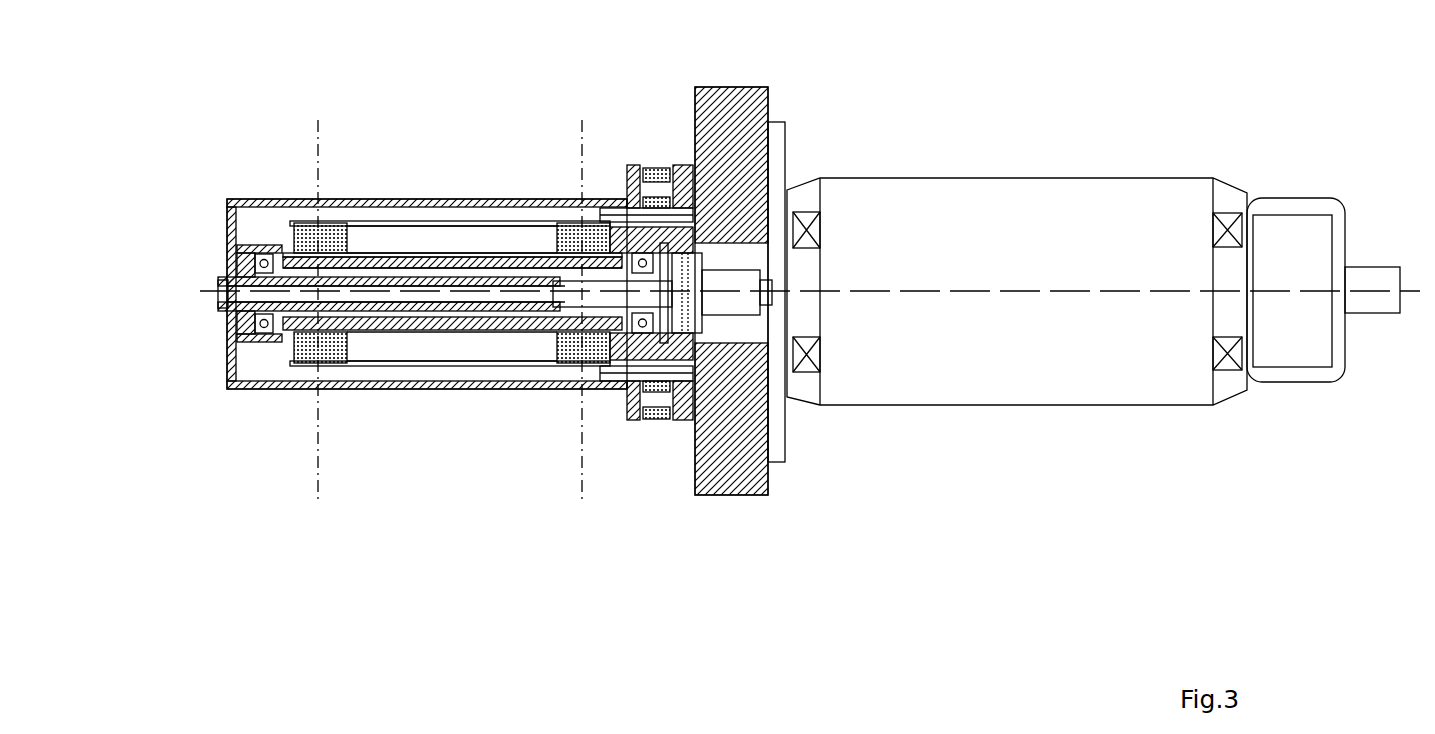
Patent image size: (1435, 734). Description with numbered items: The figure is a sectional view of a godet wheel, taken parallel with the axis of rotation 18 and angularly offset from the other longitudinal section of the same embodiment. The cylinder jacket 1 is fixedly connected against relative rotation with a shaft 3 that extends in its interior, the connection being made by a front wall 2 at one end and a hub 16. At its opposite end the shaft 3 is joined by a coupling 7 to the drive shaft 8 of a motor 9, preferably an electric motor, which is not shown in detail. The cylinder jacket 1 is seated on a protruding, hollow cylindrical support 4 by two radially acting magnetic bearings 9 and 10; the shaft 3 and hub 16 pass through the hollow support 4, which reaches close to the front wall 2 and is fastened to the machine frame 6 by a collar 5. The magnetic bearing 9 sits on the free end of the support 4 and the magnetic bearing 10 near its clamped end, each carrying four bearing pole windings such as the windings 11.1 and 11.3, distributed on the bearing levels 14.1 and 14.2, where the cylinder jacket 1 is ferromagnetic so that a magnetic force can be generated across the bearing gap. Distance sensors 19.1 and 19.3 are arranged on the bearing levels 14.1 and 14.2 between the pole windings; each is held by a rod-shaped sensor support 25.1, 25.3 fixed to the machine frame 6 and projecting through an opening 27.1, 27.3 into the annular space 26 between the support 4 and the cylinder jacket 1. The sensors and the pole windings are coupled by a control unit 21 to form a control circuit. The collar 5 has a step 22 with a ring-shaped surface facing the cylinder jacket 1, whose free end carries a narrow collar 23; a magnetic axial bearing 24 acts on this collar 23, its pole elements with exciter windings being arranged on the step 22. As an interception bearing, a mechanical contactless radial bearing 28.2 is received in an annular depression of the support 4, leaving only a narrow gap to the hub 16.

The cylinder jacket 1 is at (253, 200).
The front wall 2 is at (235, 240).
The shaft 3 is at (640, 185).
The support 4 is at (350, 215).
The collar 5 is at (672, 185).
The machine frame 6 is at (712, 120).
The coupling 7 is at (735, 170).
The drive shaft 8 is at (775, 195).
The magnetic bearing 9 is at (804, 276).
The magnetic bearing 10 is at (530, 348).
The bearing pole winding 11.1 is at (300, 222).
The bearing pole winding 11.3 is at (280, 388).
The bearing level 14.1 is at (350, 505).
The bearing level 14.2 is at (584, 505).
The hub 16 is at (450, 262).
The axis of rotation 18 is at (1045, 360).
The sensor 19.1 is at (340, 235).
The sensor 19.3 is at (303, 388).
The control unit 21 is at (1298, 330).
The step 22 is at (690, 420).
The collar 23 is at (635, 420).
The magnetic axial bearing 24 is at (245, 325).
The sensor support 25.1 is at (495, 210).
The sensor support 25.3 is at (447, 388).
The annular space 26 is at (405, 250).
The opening 27.1 is at (597, 190).
The opening 27.3 is at (772, 480).
The radial bearing 28.2 is at (775, 412).